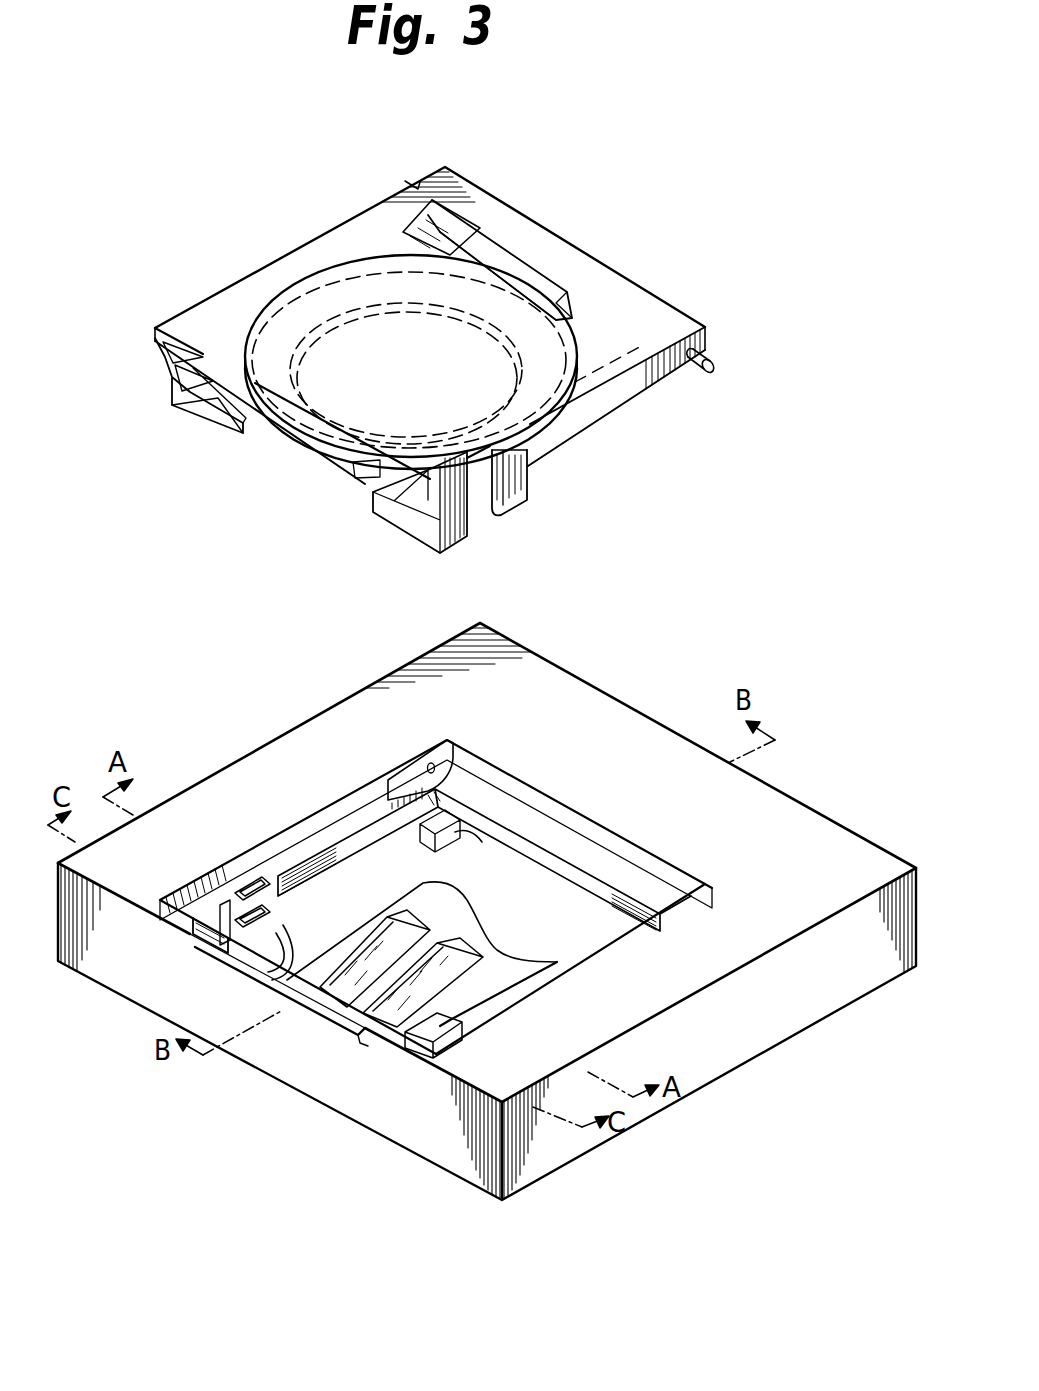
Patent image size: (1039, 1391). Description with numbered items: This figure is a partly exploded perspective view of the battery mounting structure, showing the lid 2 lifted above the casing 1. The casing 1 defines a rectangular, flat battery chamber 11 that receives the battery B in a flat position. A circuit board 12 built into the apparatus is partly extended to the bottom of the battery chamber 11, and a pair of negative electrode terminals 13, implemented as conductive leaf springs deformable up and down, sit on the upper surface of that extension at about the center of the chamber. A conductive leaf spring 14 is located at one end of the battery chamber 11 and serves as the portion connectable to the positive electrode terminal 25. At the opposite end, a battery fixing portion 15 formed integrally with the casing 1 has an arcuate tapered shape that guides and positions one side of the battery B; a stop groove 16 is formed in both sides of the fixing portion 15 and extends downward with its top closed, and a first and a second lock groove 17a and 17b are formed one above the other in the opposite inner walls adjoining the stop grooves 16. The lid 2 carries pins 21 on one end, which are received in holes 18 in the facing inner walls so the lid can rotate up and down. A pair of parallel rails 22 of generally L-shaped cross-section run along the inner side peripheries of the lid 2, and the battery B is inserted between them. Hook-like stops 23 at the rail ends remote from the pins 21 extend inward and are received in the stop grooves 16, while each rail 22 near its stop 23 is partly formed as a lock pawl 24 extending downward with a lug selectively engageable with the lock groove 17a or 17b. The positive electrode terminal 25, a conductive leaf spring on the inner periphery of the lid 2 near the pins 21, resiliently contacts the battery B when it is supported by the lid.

The casing 1 is at (725, 805).
The lid 2 is at (598, 292).
The battery chamber 11 is at (578, 925).
The circuit board 12 is at (560, 977).
The negative electrode terminals 13 is at (340, 1043).
The conductive leaf spring 14 is at (460, 825).
The battery fixing portion 15 is at (273, 967).
The stop groove 16 is at (433, 1048).
The first lock groove 17a is at (244, 890).
The second lock groove 17b is at (268, 878).
The holes 18 is at (388, 780).
The pins 21 is at (718, 368).
The rails 22 is at (600, 377).
The hook-like stops 23 is at (212, 427).
The lock pawl 24 is at (527, 503).
The positive electrode terminal 25 is at (457, 213).
The battery B is at (307, 310).